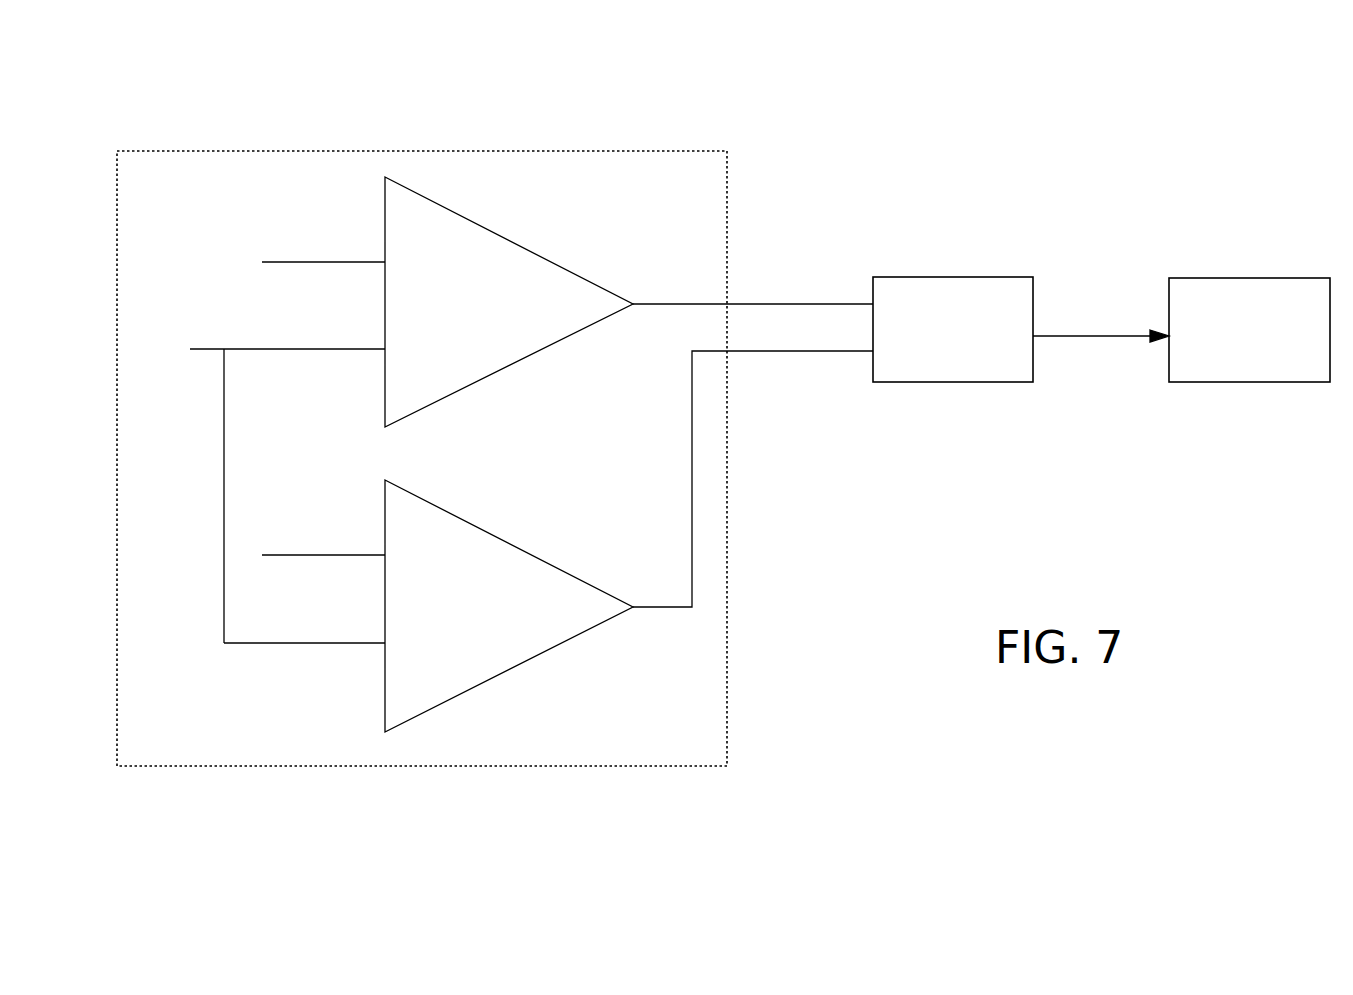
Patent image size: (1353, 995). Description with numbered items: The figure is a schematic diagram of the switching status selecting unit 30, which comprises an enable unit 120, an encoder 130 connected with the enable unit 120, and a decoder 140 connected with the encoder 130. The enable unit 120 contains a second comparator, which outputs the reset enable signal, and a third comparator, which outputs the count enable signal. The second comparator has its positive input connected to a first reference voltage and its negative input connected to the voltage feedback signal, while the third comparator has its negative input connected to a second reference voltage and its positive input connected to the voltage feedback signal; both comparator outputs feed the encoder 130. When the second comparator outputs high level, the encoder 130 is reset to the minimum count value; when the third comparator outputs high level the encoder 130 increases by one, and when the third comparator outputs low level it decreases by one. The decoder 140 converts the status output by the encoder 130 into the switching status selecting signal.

The switching status selecting unit 30 is at (1274, 155).
The enable unit 120 is at (398, 151).
The encoder 130 is at (942, 277).
The decoder 140 is at (1233, 278).